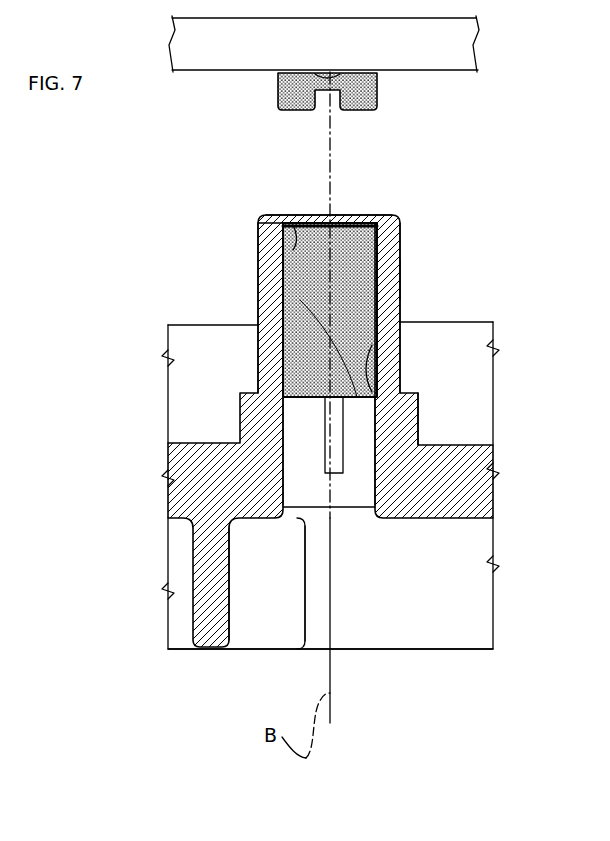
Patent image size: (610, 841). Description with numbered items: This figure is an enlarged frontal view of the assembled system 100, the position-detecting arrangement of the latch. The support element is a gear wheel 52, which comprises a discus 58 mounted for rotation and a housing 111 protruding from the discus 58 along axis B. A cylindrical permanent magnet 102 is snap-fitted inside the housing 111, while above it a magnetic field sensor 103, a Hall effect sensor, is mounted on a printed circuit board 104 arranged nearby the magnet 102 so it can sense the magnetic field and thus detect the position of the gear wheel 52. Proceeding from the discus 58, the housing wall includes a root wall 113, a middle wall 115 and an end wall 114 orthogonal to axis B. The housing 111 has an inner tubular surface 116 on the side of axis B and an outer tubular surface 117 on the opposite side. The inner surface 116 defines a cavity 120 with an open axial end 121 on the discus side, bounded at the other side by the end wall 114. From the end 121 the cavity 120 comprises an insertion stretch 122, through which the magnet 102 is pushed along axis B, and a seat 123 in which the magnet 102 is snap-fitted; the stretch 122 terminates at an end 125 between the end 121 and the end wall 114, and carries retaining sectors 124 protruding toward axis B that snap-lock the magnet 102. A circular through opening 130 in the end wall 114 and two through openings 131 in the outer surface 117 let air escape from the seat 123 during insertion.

The printed circuit board 104 is at (476, 60).
The magnetic field sensor 103 is at (377, 95).
The system 100 is at (465, 232).
The through opening 130 is at (327, 210).
The end wall 114 is at (363, 224).
The inner tubular surface 116 is at (293, 247).
The outer tubular surface 117 is at (250, 250).
The permanent magnet 102 is at (398, 255).
The middle wall 115 is at (400, 277).
The seat 123 is at (357, 397).
The end 125 is at (372, 370).
The housing 111 is at (385, 345).
The root wall 113 is at (418, 418).
The cavity 120 is at (282, 350).
The discus 58 is at (184, 487).
The through openings 131 is at (337, 475).
The open axial end 121 is at (287, 520).
The insertion stretch 122 is at (293, 442).
The retaining sectors 124 is at (291, 477).
The gear wheel 52 is at (459, 632).